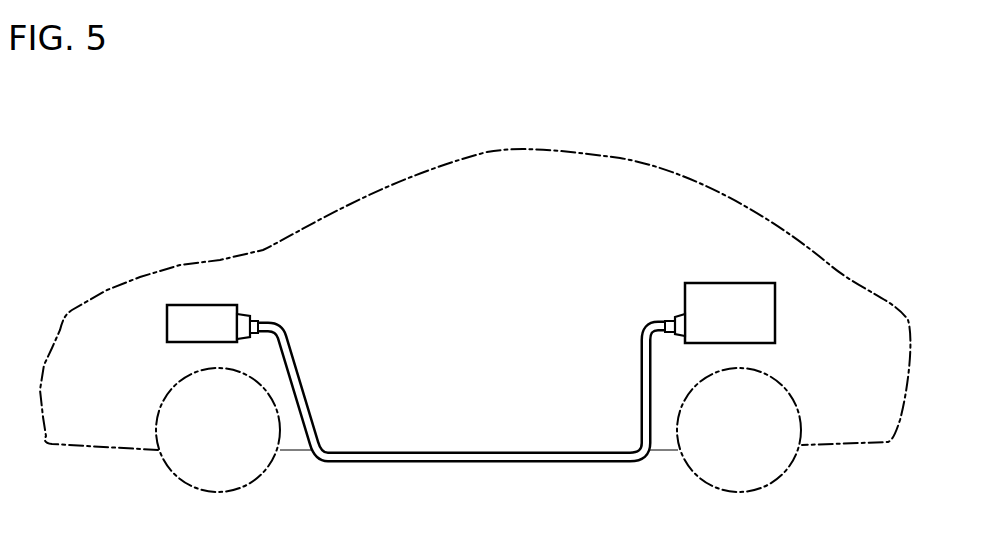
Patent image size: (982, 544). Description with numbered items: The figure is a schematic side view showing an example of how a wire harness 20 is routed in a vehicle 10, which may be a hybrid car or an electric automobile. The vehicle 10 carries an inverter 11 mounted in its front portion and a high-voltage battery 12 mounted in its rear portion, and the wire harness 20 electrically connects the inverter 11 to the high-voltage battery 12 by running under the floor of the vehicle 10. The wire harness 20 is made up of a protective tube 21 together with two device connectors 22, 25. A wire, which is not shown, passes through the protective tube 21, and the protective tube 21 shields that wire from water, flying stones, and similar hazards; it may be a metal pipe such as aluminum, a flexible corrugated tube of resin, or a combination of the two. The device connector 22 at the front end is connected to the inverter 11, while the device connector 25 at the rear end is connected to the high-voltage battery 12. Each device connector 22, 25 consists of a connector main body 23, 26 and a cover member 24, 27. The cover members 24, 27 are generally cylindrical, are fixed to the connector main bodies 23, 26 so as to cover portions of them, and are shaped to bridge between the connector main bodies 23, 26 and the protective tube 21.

The vehicle 10 is at (710, 183).
The inverter 11 is at (190, 305).
The high-voltage battery 12 is at (720, 283).
The wire harness 20 is at (462, 365).
The protective tube 21 is at (510, 466).
The device connector 22 is at (298, 300).
The connector main body 23 is at (241, 310).
The cover member 24 is at (282, 315).
The device connector 25 is at (644, 274).
The connector main body 26 is at (663, 316).
The cover member 27 is at (668, 294).